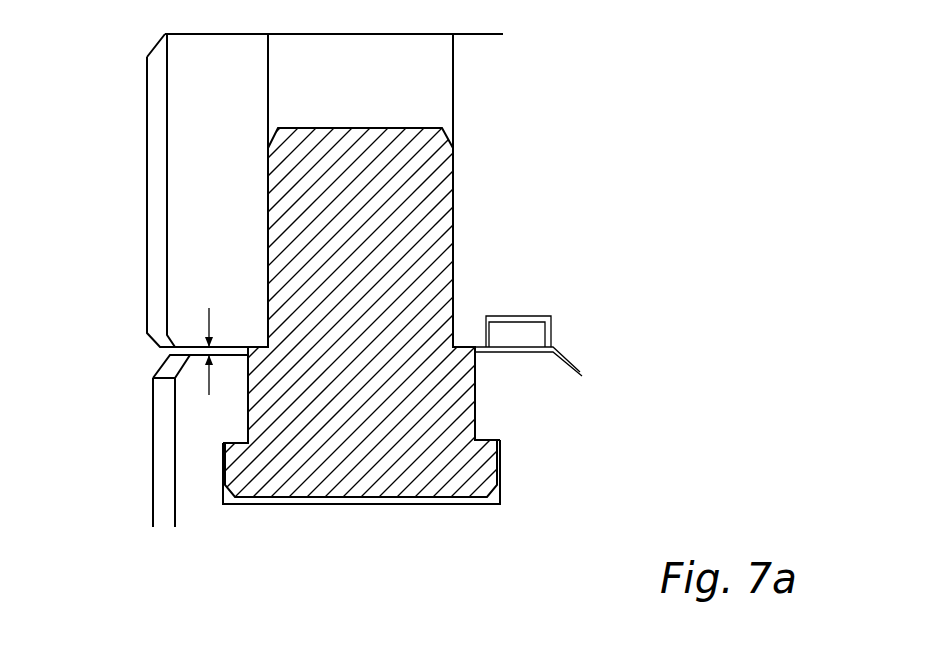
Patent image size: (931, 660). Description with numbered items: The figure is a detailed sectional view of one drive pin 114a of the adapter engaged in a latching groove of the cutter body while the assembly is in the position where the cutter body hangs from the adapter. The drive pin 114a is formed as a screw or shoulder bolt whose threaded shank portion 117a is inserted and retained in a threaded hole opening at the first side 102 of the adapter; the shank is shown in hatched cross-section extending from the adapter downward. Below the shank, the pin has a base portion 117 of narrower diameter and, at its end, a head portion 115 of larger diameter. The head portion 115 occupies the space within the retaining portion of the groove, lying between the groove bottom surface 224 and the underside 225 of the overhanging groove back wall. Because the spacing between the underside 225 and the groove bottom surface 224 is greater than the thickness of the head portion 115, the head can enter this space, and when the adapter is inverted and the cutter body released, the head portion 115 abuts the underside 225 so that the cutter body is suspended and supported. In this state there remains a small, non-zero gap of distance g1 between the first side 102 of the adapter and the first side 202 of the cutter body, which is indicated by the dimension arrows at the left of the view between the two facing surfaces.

The first side of the adapter 102 is at (190, 347).
The first side of the cutter body 202 is at (200, 358).
The gap g1 is at (209, 312).
The drive pin 114a is at (458, 197).
The threaded shank portion 117a is at (429, 258).
The base portion 117 is at (452, 378).
The underside of groove back wall 225 is at (493, 452).
The head portion 115 is at (480, 478).
The groove bottom surface 224 is at (505, 498).